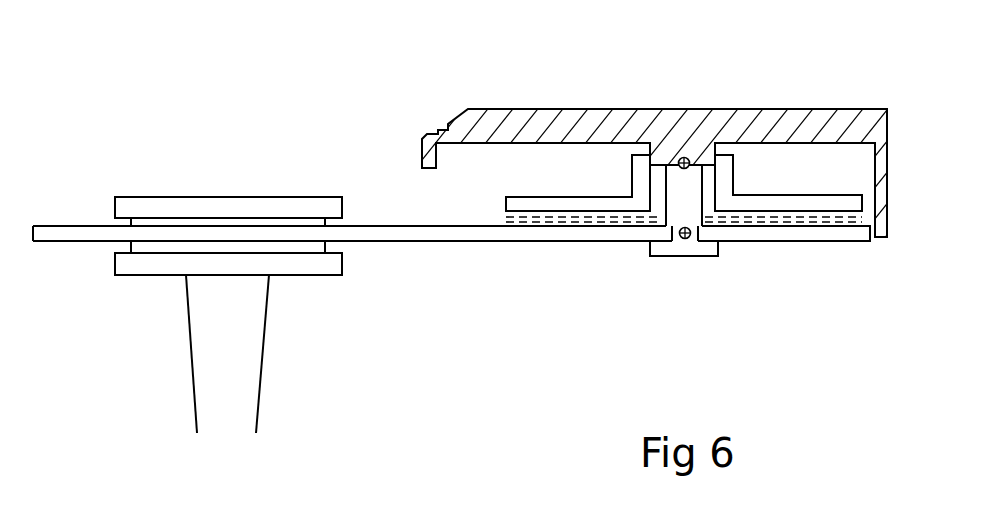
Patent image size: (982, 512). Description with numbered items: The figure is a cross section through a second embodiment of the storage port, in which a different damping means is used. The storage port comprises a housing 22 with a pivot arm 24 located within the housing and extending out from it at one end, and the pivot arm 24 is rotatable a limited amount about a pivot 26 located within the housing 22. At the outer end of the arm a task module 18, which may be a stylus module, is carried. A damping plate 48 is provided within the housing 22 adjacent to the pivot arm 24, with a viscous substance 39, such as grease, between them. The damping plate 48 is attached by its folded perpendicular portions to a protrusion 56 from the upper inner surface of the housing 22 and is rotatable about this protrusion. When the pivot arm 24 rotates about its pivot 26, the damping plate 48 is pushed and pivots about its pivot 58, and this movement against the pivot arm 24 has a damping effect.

The task module 18 is at (220, 345).
The housing 22 is at (507, 115).
The pivot arm 24 is at (378, 243).
The pivot 26 is at (687, 239).
The viscous substance 39 is at (596, 222).
The damping plate 48 is at (551, 203).
The protrusion 56 is at (712, 158).
The pivot 58 is at (684, 157).